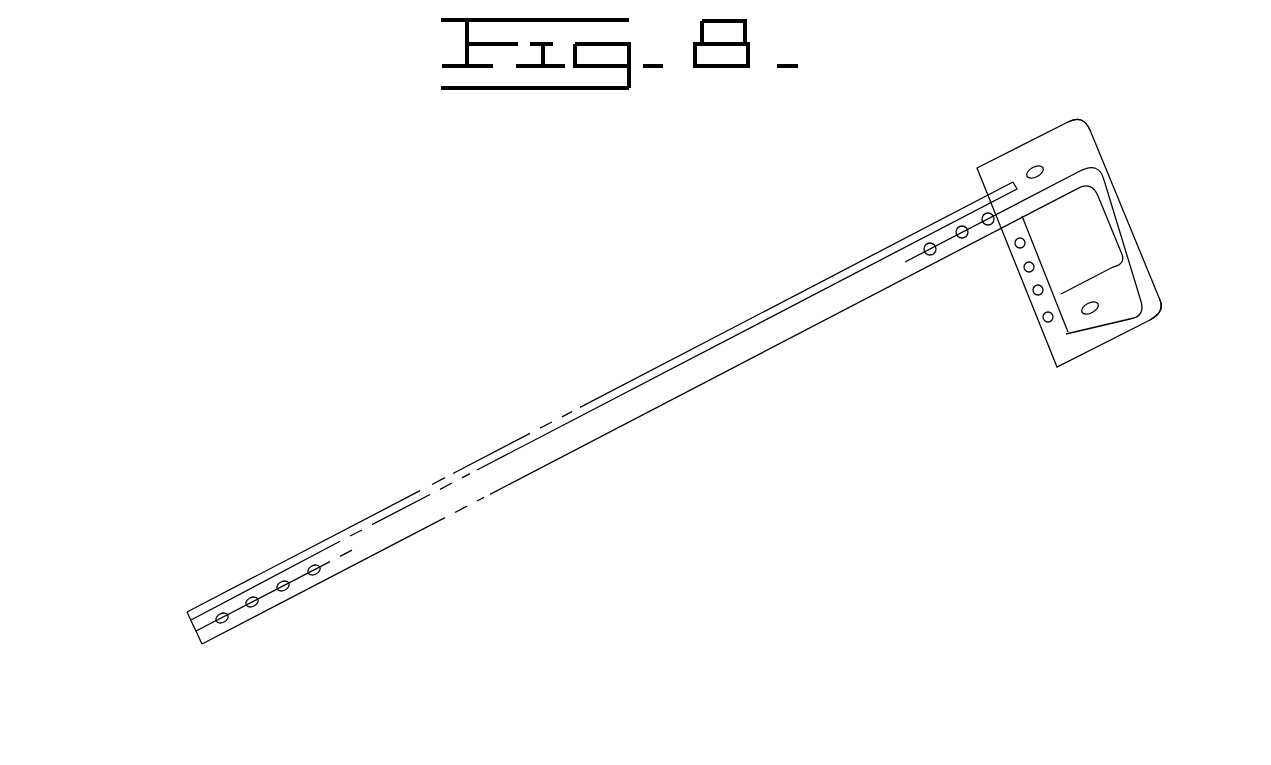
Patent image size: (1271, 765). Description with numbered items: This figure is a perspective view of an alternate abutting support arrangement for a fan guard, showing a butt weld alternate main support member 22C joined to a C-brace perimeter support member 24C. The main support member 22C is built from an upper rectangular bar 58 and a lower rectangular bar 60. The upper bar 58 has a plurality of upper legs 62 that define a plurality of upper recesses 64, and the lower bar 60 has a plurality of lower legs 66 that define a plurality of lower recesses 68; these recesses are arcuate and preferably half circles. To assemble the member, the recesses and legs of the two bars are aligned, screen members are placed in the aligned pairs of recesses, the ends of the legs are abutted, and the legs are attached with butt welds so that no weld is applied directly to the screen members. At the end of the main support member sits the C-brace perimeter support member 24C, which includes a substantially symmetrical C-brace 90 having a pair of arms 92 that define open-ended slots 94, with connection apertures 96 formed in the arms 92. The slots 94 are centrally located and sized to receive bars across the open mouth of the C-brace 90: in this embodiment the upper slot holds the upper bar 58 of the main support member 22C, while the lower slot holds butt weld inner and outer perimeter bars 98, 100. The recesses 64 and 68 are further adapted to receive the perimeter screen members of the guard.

The butt weld alternate main support member 22C is at (459, 439).
The C-brace perimeter support member 24C is at (1176, 139).
The upper rectangular bar 58 is at (938, 224).
The lower rectangular bar 60 is at (212, 632).
The upper legs 62 is at (284, 582).
The upper recesses 64 is at (250, 598).
The lower legs 66 is at (945, 243).
The lower recesses 68 is at (958, 238).
The C-brace 90 is at (1113, 208).
The arms 92 is at (1017, 158).
The open-ended slots 94 is at (1000, 192).
The connection apertures 96 is at (1060, 168).
The butt weld inner perimeter bar 98 is at (1023, 284).
The butt weld outer perimeter bar 100 is at (1030, 254).